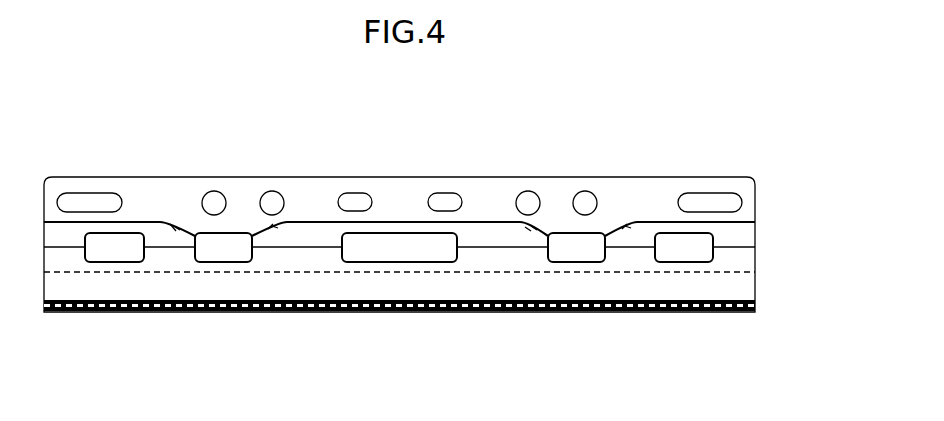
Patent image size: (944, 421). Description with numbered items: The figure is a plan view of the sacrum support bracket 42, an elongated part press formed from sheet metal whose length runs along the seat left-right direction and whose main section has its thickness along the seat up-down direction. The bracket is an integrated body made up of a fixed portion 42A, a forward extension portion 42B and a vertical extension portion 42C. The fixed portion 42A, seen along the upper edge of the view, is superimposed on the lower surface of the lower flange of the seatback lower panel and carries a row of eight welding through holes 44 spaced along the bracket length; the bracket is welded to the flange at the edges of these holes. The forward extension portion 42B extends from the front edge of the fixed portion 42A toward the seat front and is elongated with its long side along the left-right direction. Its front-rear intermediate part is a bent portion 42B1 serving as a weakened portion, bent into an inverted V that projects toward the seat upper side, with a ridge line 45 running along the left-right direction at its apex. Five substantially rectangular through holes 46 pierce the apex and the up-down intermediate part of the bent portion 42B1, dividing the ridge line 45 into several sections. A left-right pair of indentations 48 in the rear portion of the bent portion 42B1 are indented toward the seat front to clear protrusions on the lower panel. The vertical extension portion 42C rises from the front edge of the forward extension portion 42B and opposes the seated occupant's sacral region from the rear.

The sacrum support bracket 42 is at (484, 140).
The fixed portion 42A is at (398, 192).
The forward extension portion 42B is at (287, 293).
The bent portion 42B1 is at (742, 258).
The vertical extension portion 42C is at (484, 312).
The welding through holes 44 is at (106, 199).
The ridge line 45 is at (308, 247).
The through holes 46 is at (111, 253).
The indentations 48 is at (178, 229).